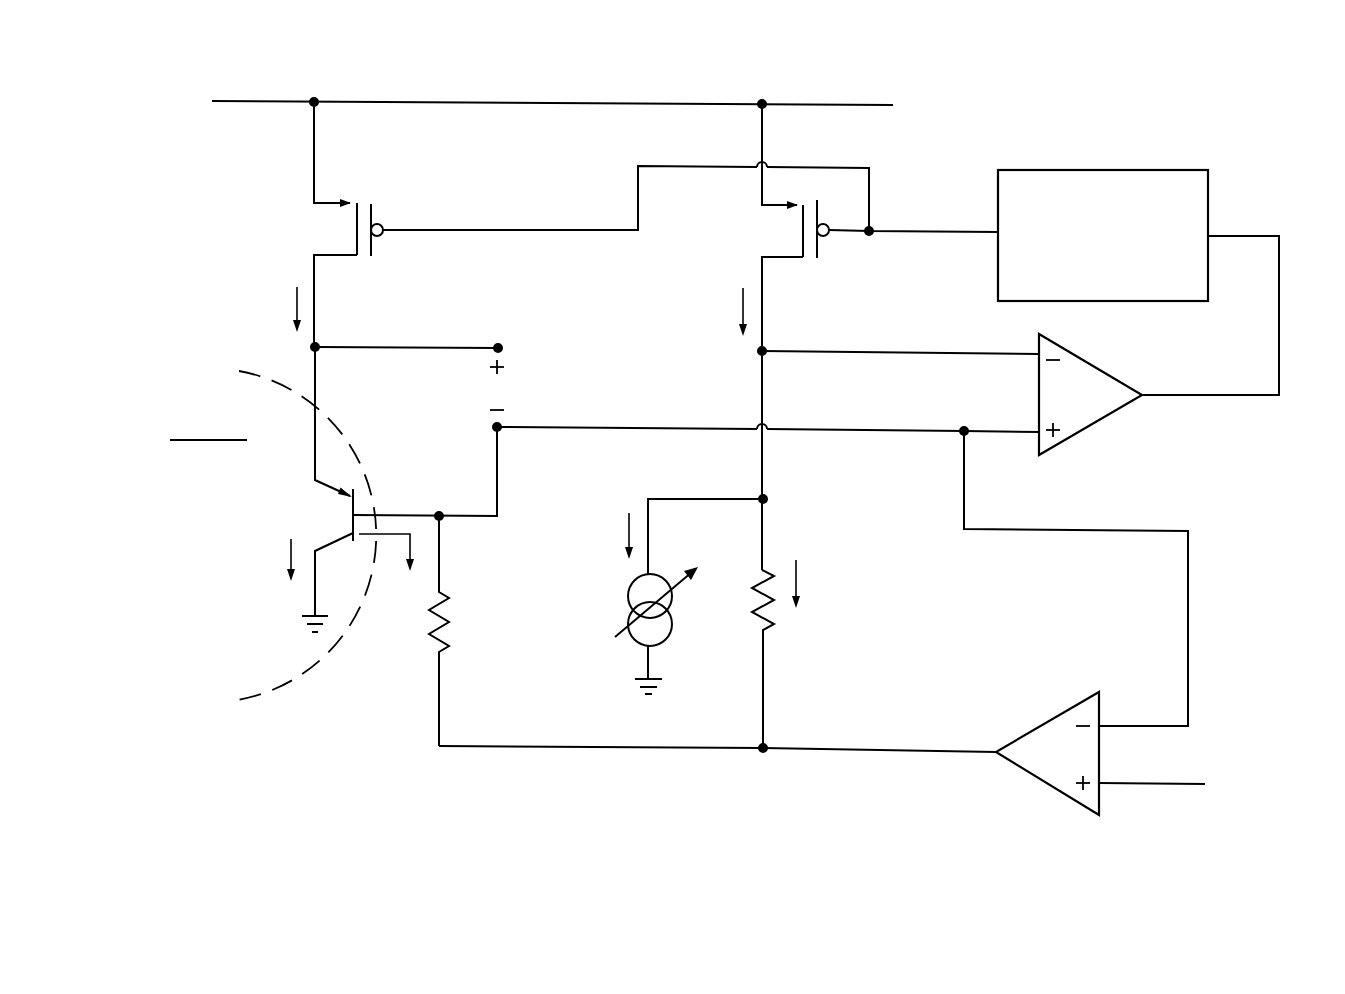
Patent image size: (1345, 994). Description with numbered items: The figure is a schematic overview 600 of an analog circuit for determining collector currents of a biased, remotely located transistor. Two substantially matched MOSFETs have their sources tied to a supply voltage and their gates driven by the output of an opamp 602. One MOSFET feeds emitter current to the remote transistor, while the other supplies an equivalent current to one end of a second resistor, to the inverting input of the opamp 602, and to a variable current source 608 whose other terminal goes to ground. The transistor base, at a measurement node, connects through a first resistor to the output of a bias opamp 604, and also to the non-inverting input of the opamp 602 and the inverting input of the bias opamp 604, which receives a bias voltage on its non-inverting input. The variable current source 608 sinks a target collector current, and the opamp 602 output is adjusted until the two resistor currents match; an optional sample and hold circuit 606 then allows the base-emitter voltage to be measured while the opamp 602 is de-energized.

The overview 600 is at (1233, 72).
The opamp 602 is at (1100, 365).
The bias opamp 604 is at (1047, 784).
The optional sample and hold circuit 606 is at (1103, 170).
The variable current source 608 is at (635, 641).